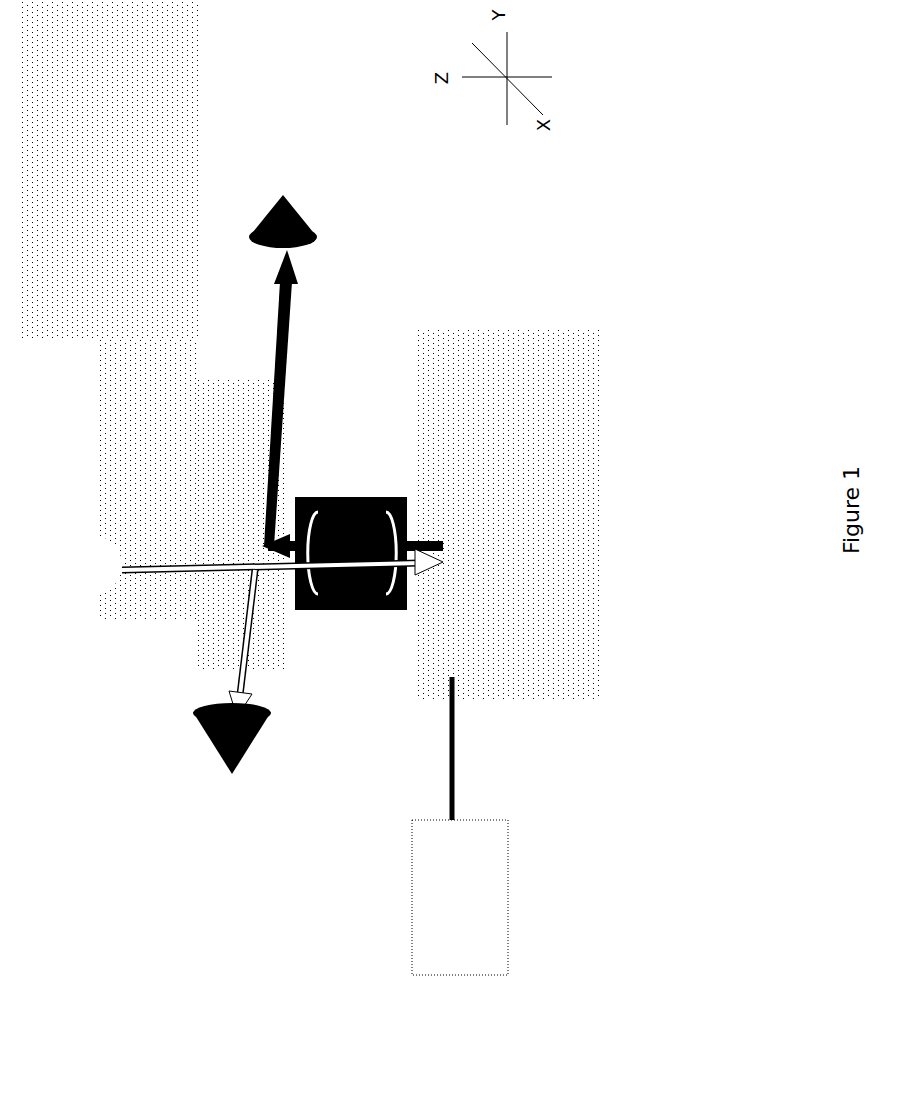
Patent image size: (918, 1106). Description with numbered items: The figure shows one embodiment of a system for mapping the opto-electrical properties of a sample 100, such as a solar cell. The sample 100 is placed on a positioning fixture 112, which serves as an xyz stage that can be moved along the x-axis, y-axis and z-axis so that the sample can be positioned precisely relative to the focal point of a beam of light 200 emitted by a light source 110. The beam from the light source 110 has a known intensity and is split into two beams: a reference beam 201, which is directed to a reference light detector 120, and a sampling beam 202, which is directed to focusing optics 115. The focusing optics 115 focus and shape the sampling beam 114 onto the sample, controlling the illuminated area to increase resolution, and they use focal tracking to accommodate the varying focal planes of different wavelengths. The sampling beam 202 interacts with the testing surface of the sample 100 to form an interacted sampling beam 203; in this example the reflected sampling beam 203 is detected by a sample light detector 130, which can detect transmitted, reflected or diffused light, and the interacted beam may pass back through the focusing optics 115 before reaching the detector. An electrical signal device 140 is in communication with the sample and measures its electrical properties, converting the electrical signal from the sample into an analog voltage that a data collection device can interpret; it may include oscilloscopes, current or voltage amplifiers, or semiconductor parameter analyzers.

The sample 100 is at (460, 373).
The light source 110 is at (88, 537).
The positioning fixture 112 is at (552, 433).
The sampling beam 114 is at (275, 410).
The focusing optics 115 is at (392, 496).
The reference light detector 120 is at (232, 776).
The sample light detector 130 is at (273, 197).
The electrical signal device 140 is at (412, 915).
The beam of light 200 is at (155, 566).
The reference beam 201 is at (240, 647).
The sampling beam 202 is at (282, 572).
The interacted sampling beam 203 is at (248, 443).